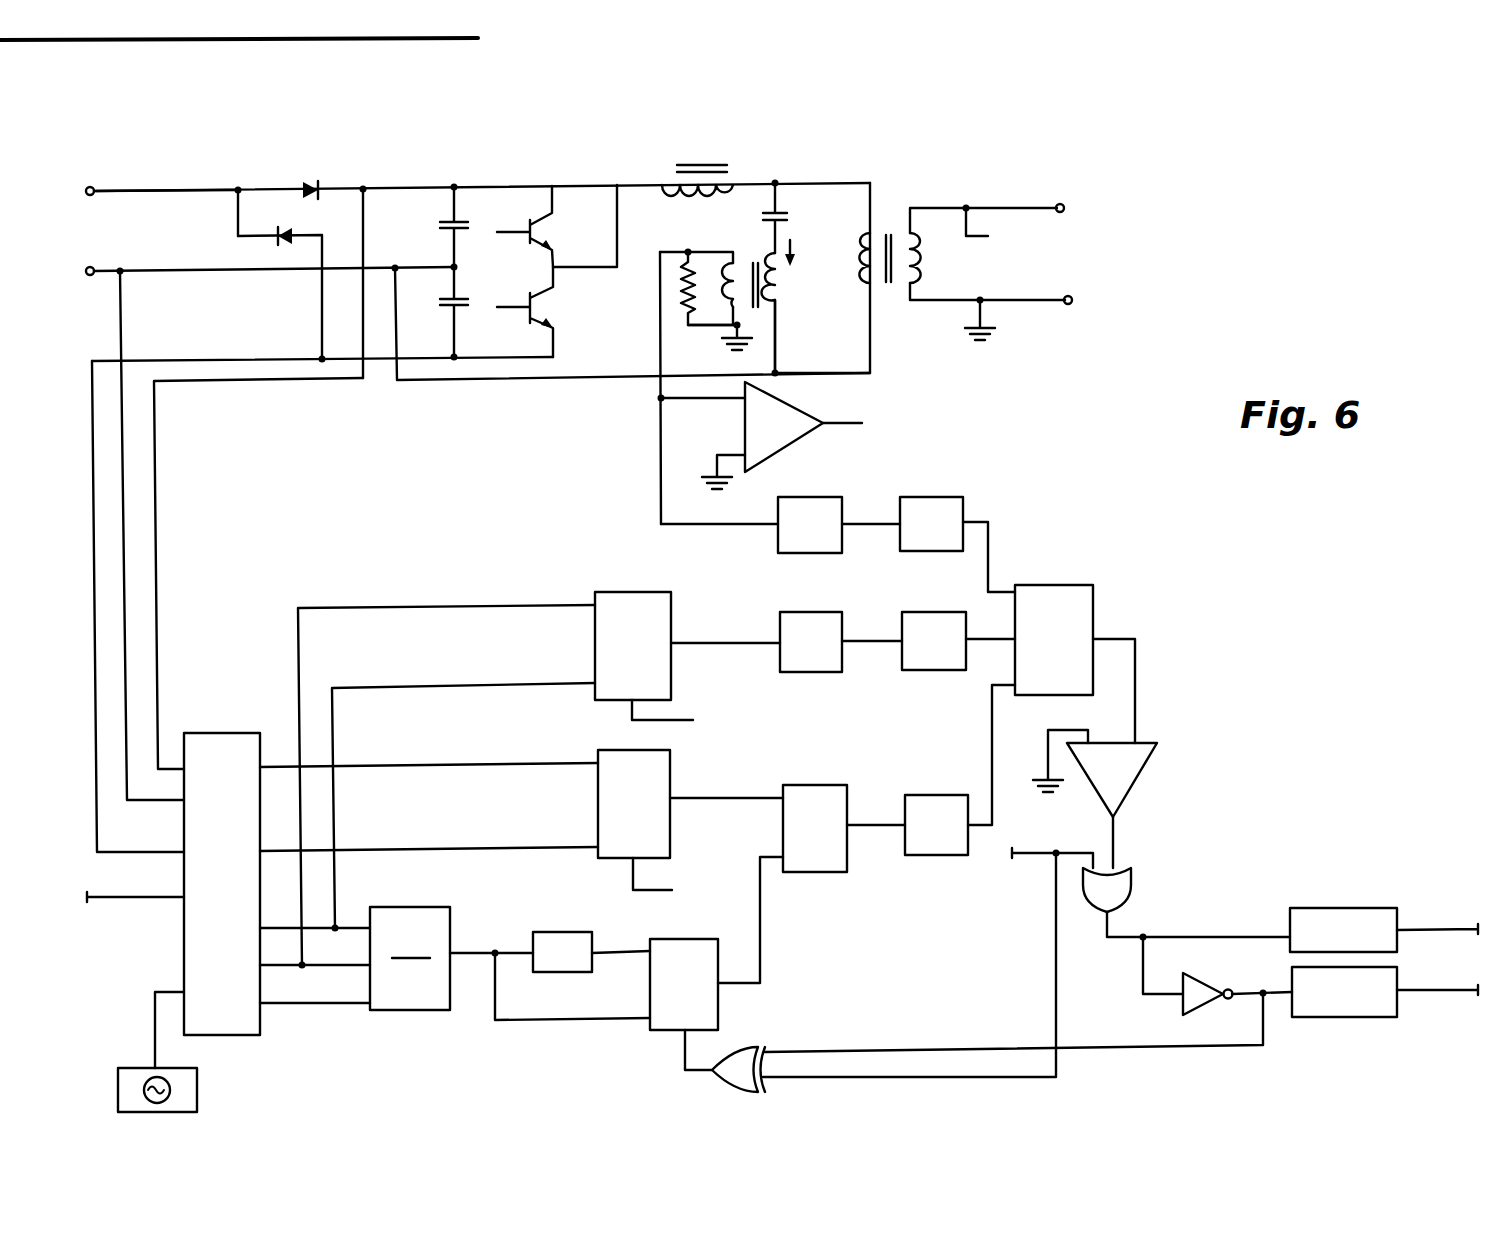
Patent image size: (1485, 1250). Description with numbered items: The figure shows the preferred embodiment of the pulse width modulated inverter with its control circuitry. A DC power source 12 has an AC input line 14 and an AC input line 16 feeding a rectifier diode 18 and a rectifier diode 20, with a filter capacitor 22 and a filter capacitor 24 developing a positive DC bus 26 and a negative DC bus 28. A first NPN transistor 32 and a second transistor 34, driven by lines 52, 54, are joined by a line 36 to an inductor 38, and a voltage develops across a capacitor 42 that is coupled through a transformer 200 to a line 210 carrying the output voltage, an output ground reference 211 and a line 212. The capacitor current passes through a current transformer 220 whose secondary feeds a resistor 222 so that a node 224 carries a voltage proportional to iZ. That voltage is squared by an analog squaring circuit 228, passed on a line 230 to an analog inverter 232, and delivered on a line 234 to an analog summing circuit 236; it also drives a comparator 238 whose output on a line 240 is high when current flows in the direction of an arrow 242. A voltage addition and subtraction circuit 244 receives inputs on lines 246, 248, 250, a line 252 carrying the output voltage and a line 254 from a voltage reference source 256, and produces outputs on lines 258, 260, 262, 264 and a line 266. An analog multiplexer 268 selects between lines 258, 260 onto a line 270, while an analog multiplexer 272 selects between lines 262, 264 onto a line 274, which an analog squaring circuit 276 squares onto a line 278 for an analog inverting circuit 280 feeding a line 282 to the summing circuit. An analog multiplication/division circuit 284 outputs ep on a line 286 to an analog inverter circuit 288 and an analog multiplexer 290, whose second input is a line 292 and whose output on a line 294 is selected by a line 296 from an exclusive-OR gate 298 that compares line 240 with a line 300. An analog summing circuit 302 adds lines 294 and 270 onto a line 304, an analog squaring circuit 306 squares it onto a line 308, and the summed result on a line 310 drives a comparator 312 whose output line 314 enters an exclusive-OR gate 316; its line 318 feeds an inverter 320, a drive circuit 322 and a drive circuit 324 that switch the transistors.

The DC power source 12 is at (402, 430).
The AC input line 14 is at (178, 192).
The AC input line 16 is at (165, 273).
The rectifier diode 18 is at (302, 189).
The rectifier diode 20 is at (278, 243).
The filter capacitor 22 is at (445, 224).
The filter capacitor 24 is at (445, 302).
The positive DC bus 26 is at (333, 192).
The negative DC bus 28 is at (243, 359).
The first NPN transistor 32 is at (538, 228).
The second transistor 34 is at (545, 318).
The line 36 is at (584, 268).
The inductor 38 is at (665, 188).
The capacitor 42 is at (787, 217).
The line 52 is at (508, 231).
The line 54 is at (508, 306).
The transformer 200 is at (890, 230).
The line 210 is at (1063, 205).
The output ground reference 211 is at (996, 333).
The line 212 is at (1070, 298).
The current transformer 220 is at (780, 300).
The resistor 222 is at (661, 285).
The node 224 is at (690, 251).
The analog squaring circuit 228 is at (820, 497).
The line 230 is at (866, 526).
The analog inverter 232 is at (950, 497).
The line 234 is at (990, 535).
The analog summing circuit 236 is at (1070, 584).
The comparator 238 is at (790, 400).
The line 240 is at (845, 427).
The arrow 242 is at (790, 275).
The voltage addition and subtraction circuit 244 is at (215, 732).
The line 246 is at (125, 512).
The line 248 is at (155, 552).
The line 250 is at (94, 628).
The line 252 is at (990, 237).
The line 254 is at (157, 1050).
The voltage reference source 256 is at (198, 1094).
The line 258 is at (405, 766).
The line 260 is at (400, 849).
The line 262 is at (380, 607).
The line 264 is at (395, 687).
The line 266 is at (290, 1003).
The analog multiplexer 268 is at (672, 759).
The line 270 is at (705, 799).
The analog multiplexer 272 is at (628, 591).
The line 274 is at (712, 642).
The analog squaring circuit 276 is at (812, 611).
The line 278 is at (862, 643).
The analog inverting circuit 280 is at (935, 611).
The line 282 is at (988, 650).
The analog multiplication/division circuit 284 is at (432, 907).
The line 286 is at (475, 952).
The analog inverter circuit 288 is at (572, 931).
The analog multiplexer 290 is at (720, 1000).
The line 292 is at (605, 955).
The line 294 is at (762, 935).
The line 296 is at (684, 1050).
The exclusive-OR gate 298 is at (718, 1085).
The line 300 is at (780, 1050).
The analog summing circuit 302 is at (820, 873).
The line 304 is at (873, 824).
The analog squaring circuit 306 is at (935, 856).
The line 308 is at (992, 750).
The line 310 is at (1115, 638).
The comparator 312 is at (1140, 775).
The line 314 is at (1115, 840).
The exclusive-OR gate 316 is at (1125, 892).
The line 318 is at (1216, 936).
The inverter 320 is at (1185, 1005).
The drive circuit 322 is at (1338, 1018).
The drive circuit 324 is at (1360, 907).